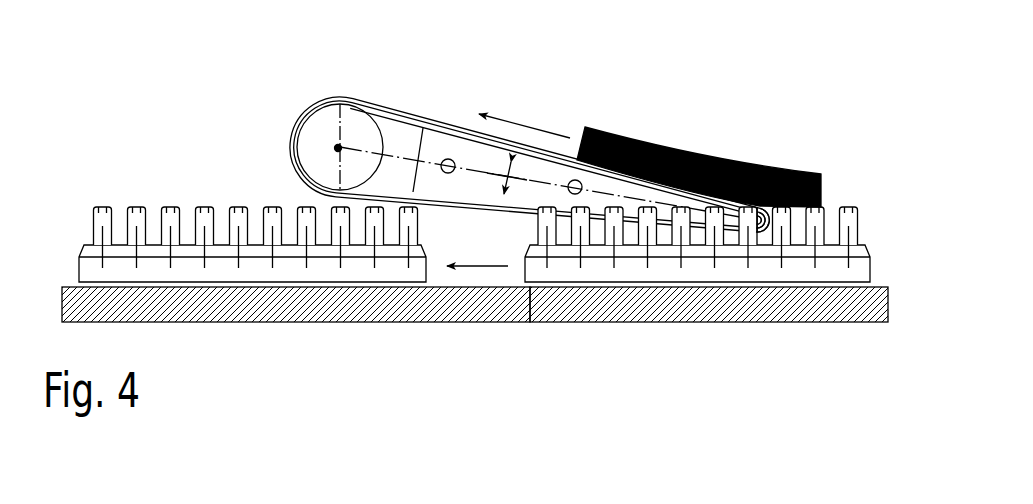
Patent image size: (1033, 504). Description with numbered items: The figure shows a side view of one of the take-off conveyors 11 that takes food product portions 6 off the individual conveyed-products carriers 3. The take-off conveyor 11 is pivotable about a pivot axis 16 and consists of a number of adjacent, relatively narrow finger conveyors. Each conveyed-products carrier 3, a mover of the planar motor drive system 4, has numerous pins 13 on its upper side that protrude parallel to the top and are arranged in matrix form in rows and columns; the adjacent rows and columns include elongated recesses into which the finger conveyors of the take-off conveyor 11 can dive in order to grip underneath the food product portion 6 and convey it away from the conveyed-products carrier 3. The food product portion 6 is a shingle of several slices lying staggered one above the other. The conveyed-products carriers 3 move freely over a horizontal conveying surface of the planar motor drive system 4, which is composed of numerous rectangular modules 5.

The take-off conveyor 11 is at (499, 120).
The pivot axis 16 is at (336, 148).
The food product portion 6 is at (681, 155).
The conveyed-products carrier 3 is at (725, 200).
The pins 13 is at (851, 220).
The planar motor drive system 4 is at (497, 331).
The rectangular modules 5 is at (360, 306).